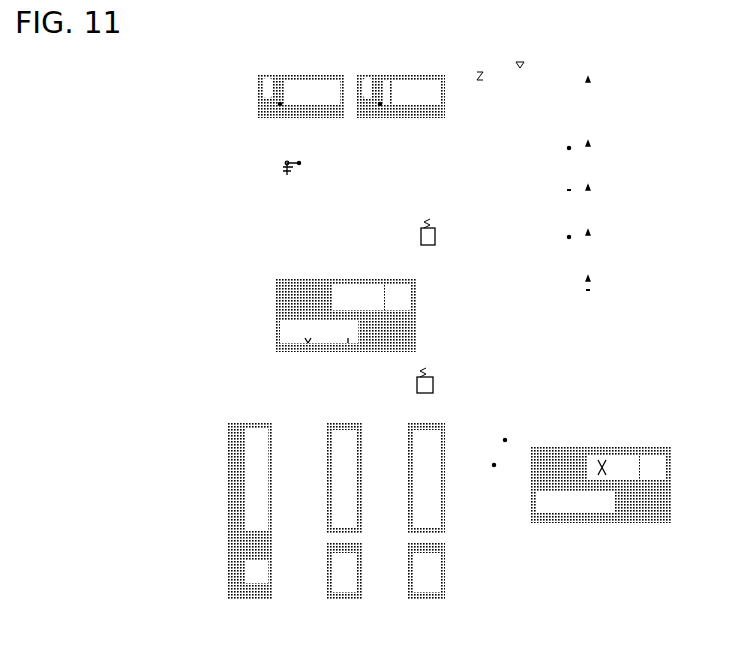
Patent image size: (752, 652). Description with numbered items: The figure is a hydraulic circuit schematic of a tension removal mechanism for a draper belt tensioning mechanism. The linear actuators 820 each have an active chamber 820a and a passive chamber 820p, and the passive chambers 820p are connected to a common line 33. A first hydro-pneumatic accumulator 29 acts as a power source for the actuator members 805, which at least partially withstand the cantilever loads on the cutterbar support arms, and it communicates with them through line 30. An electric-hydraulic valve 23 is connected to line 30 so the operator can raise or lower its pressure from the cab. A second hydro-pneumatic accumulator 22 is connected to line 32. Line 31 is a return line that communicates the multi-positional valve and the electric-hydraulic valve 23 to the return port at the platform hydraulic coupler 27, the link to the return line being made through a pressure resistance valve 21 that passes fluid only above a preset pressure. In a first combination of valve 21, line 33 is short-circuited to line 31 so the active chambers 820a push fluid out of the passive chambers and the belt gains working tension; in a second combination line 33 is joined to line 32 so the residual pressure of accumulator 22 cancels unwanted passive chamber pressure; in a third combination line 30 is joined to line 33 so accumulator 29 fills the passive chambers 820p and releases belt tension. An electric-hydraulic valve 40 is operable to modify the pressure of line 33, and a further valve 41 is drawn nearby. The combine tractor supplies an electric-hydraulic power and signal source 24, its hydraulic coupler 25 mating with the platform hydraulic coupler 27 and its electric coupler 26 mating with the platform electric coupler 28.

The linear actuator 820 is at (263, 78).
The active chamber 820a is at (383, 80).
The passive chamber 820p is at (404, 80).
The common line 33 is at (326, 134).
The pressure resistance valve 21 is at (297, 163).
The second hydro-pneumatic accumulator 22 is at (478, 64).
The first hydro-pneumatic accumulator 29 is at (528, 62).
The pressure line 30 is at (569, 107).
The actuator member 805 is at (642, 74).
The line 32 is at (482, 148).
The return line 31 is at (496, 237).
The electric-hydraulic valve 40 is at (275, 318).
The pressure relief valve 41 is at (433, 378).
The electric-hydraulic power and signal source 24 is at (229, 427).
The hydraulic coupler 25 is at (329, 427).
The electric coupler 26 is at (329, 557).
The platform hydraulic coupler 27 is at (428, 427).
The platform electric coupler 28 is at (440, 548).
The electric-hydraulic valve 23 is at (672, 448).